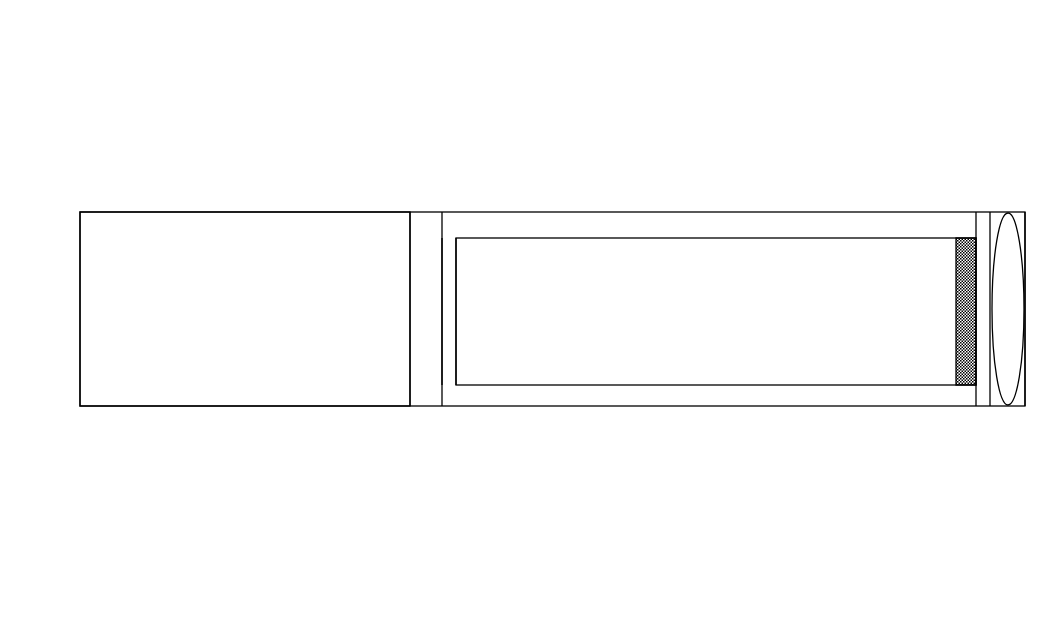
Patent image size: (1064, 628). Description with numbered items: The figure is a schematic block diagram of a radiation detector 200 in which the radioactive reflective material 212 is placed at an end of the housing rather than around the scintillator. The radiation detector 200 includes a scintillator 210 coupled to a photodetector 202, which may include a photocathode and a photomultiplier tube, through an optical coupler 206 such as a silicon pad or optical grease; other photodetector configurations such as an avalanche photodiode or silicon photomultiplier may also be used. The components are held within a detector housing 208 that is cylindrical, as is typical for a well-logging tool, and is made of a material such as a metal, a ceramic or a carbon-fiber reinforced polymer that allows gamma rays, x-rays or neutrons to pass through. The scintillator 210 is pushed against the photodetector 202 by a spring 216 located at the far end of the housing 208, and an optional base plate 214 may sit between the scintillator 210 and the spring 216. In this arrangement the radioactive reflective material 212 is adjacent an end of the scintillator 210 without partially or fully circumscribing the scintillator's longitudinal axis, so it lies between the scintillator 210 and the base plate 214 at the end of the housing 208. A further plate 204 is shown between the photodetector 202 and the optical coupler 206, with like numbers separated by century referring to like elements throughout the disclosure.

The radiation detector 200 is at (519, 306).
The photodetector 202 is at (211, 288).
The base plate 204 is at (397, 325).
The optical coupler 206 is at (405, 276).
The detector housing 208 is at (552, 285).
The scintillator 210 is at (716, 275).
The radioactive reflective material 212 is at (907, 342).
The base plate 214 is at (944, 285).
The spring 216 is at (977, 329).